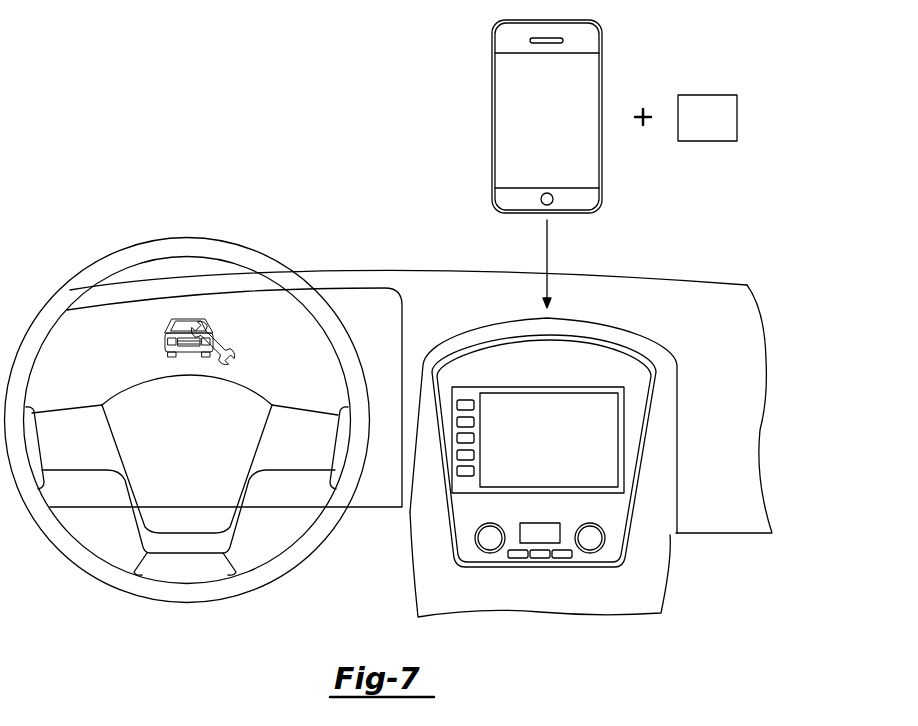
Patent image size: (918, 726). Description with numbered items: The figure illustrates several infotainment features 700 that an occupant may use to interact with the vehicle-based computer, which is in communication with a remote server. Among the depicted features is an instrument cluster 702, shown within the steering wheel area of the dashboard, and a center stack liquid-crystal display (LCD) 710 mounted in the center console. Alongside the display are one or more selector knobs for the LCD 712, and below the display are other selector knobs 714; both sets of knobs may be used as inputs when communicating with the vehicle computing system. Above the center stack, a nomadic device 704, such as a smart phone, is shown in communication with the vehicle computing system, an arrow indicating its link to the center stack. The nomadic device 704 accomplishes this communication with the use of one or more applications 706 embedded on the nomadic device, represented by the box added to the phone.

The infotainment features 700 is at (421, 309).
The instrument cluster 702 is at (152, 337).
The nomadic device 704 is at (458, 97).
The applications 706 is at (710, 153).
The center stack liquid-crystal display (LCD) 710 is at (545, 411).
The selector knobs for the LCD 712 is at (461, 478).
The other selector knobs 714 is at (491, 549).